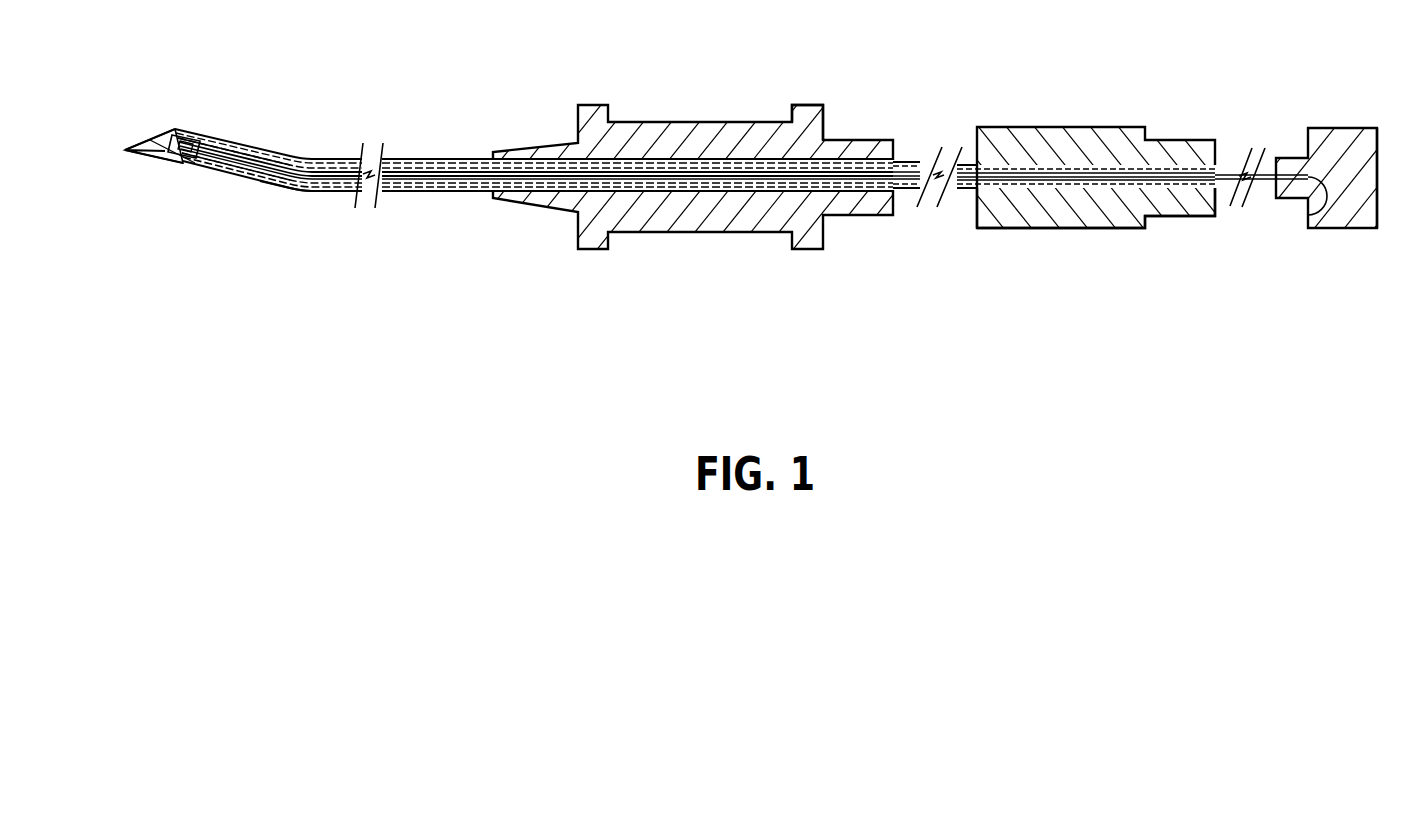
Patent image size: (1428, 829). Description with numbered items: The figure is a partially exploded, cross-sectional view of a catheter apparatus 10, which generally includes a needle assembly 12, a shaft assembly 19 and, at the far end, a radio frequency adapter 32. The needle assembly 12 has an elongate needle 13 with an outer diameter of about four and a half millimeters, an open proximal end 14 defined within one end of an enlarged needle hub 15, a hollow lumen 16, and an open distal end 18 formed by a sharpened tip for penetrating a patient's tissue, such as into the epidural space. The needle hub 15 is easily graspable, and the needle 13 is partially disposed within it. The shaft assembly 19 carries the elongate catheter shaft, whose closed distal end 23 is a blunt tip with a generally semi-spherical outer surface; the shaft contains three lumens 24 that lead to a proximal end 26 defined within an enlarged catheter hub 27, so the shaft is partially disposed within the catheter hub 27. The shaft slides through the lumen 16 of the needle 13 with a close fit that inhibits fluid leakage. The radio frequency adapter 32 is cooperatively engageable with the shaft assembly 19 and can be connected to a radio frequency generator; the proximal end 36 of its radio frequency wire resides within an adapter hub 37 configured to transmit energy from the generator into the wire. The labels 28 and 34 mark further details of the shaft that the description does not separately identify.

The catheter apparatus 10 is at (738, 66).
The needle assembly 12 is at (443, 124).
The needle 13 is at (341, 159).
The open proximal end 14 is at (899, 162).
The needle hub 15 is at (806, 115).
The hollow lumen 16 is at (161, 151).
The open distal end 18 is at (125, 150).
The shaft assembly 19 is at (1040, 110).
The closed distal end 23 is at (180, 139).
The lumens 24 is at (250, 149).
The proximal end 26 is at (1216, 177).
The catheter hub 27 is at (1042, 215).
The inner fiber layer 28 is at (210, 170).
The radio frequency adapter 32 is at (1327, 105).
The cable bend region 34 is at (282, 193).
The proximal end 36 is at (1310, 213).
The adapter hub 37 is at (1379, 214).